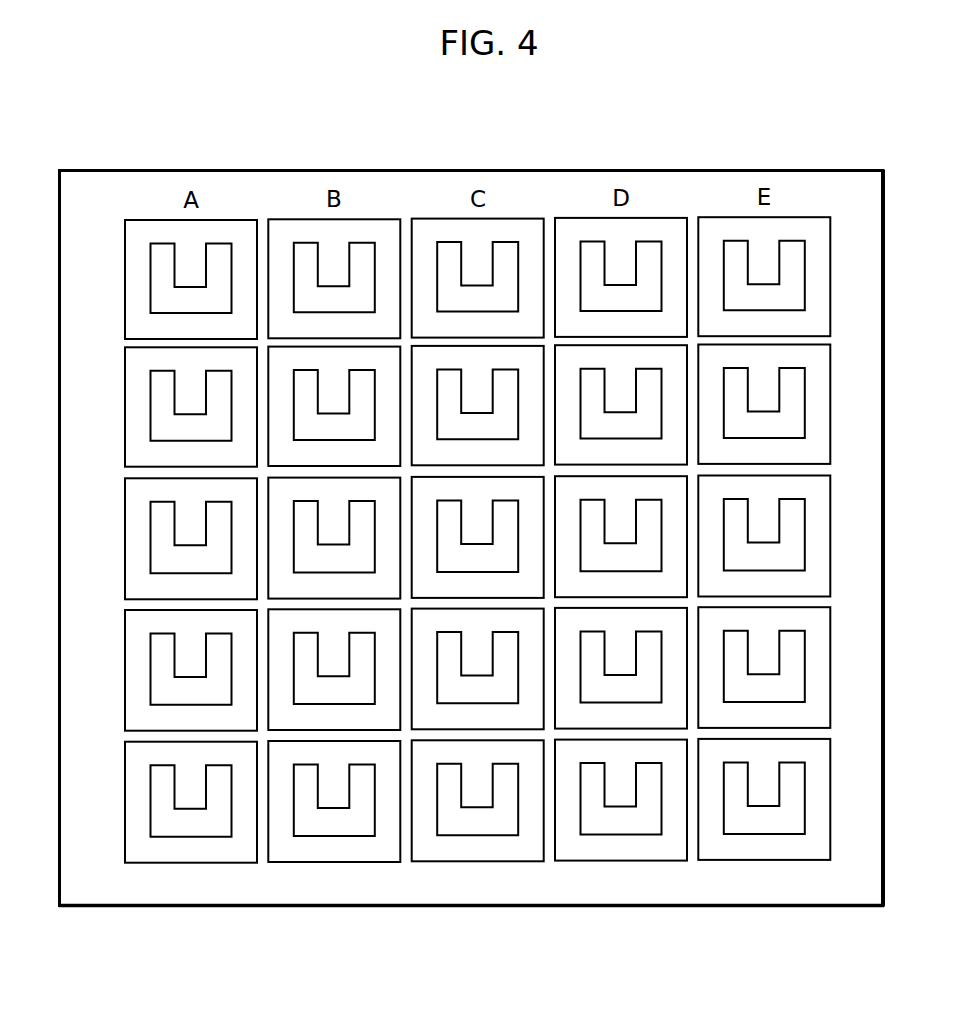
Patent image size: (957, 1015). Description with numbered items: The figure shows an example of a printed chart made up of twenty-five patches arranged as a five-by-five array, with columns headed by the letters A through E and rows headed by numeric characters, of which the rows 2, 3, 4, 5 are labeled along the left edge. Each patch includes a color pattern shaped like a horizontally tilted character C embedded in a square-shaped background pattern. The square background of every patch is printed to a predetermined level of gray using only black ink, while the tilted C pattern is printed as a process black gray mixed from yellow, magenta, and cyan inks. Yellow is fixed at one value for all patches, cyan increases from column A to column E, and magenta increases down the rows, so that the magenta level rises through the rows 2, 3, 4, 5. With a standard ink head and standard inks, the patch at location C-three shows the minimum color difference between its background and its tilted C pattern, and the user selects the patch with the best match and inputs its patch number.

The row 2 of sample array 2 is at (462, 406).
The row 3 of sample array 3 is at (462, 538).
The row 4 of sample array 4 is at (462, 669).
The row 5 of sample array 5 is at (462, 801).